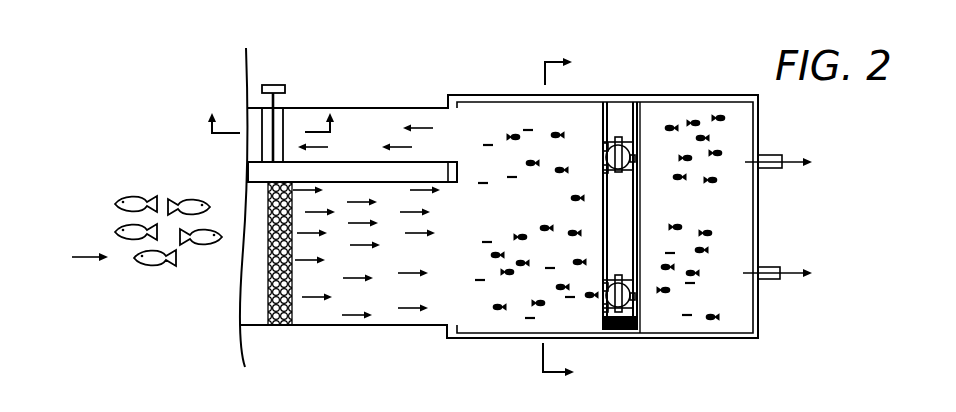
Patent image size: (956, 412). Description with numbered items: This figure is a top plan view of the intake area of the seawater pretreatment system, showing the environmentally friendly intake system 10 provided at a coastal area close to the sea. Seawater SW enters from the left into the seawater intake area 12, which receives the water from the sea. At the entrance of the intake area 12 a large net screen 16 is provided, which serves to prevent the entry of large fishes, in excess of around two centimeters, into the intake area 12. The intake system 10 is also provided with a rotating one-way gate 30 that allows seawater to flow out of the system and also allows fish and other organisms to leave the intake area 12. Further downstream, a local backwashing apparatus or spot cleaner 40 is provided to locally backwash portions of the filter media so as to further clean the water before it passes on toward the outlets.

The intake system 10 is at (493, 47).
The seawater intake area 12 is at (500, 222).
The large net screen 16 is at (268, 297).
The rotating one-way gate 30 is at (285, 118).
The local backwashing apparatus 40 is at (622, 140).